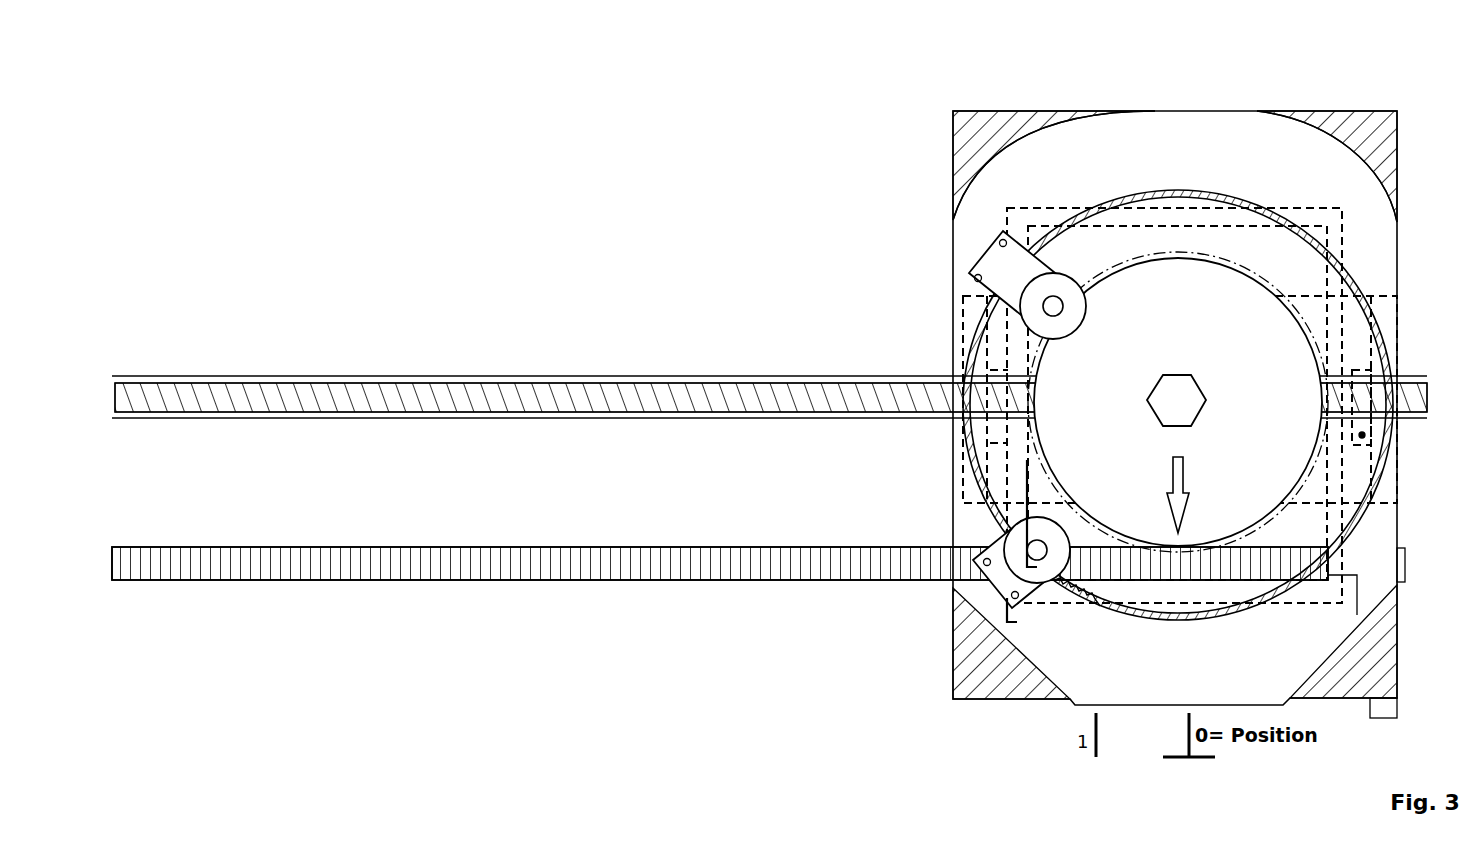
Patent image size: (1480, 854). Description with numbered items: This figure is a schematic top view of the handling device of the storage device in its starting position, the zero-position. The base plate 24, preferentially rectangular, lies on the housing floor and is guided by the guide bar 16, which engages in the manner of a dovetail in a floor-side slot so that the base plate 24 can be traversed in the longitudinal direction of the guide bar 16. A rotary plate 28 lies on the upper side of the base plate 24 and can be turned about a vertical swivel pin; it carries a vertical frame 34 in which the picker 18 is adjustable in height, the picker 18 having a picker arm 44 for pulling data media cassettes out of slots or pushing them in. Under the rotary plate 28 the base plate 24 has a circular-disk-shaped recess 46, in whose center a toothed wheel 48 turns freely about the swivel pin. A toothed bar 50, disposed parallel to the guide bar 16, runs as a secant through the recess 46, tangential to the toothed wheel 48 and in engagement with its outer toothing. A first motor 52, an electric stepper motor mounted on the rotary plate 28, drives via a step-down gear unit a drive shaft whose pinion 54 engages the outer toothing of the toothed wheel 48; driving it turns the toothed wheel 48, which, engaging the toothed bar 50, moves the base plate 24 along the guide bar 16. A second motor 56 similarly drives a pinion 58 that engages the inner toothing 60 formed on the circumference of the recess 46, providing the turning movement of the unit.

The guide bar 16 is at (458, 404).
The picker 18 is at (1321, 213).
The base plate 24 is at (972, 131).
The rotary plate 28 is at (1220, 130).
The vertical frame 34 is at (1390, 445).
The picker arm 44 is at (1007, 620).
The recess 46 is at (1284, 268).
The toothed wheel 48 is at (1246, 375).
The toothed bar 50 is at (617, 556).
The first motor 52 is at (1042, 286).
The pinion 54 is at (1053, 306).
The second motor 56 is at (1008, 547).
The pinion 58 is at (1037, 550).
The inner toothing 60 is at (1096, 605).